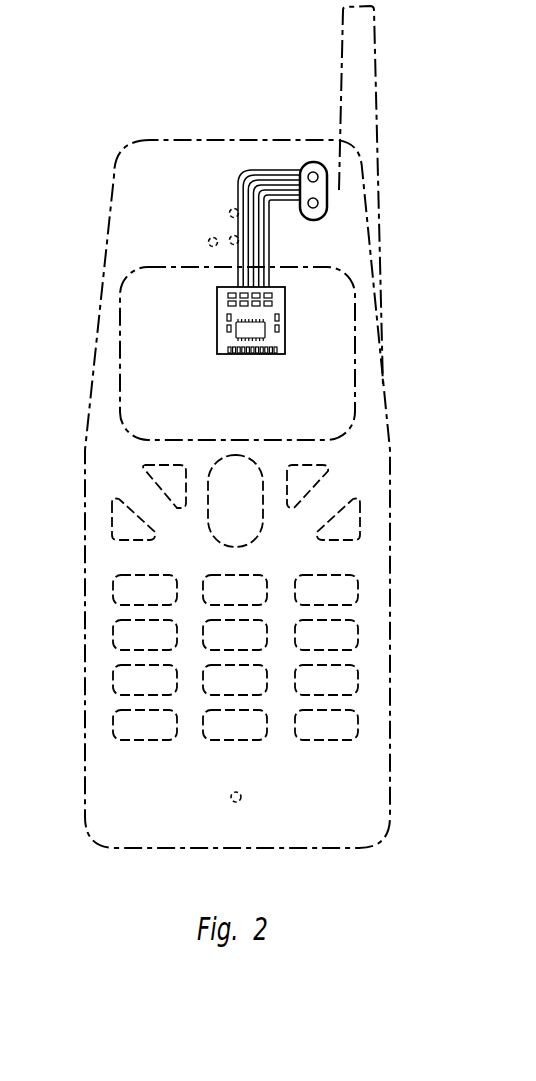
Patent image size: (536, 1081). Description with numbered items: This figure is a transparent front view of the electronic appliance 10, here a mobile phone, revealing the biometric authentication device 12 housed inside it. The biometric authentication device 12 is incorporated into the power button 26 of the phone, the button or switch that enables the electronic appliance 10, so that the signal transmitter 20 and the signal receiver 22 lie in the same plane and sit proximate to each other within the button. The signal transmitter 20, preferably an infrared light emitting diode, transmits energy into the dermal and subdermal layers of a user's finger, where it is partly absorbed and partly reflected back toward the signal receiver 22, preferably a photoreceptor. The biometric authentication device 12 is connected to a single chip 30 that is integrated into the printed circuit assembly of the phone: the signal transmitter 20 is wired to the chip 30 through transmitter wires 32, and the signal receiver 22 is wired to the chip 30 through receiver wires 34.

The electronic appliance 10 is at (118, 118).
The biometric authentication device 12 is at (235, 236).
The signal transmitter 20 is at (358, 163).
The signal receiver 22 is at (318, 203).
The power button 26 is at (241, 192).
The chip 30 is at (217, 332).
The transmitter wires 32 is at (237, 188).
The receiver wires 34 is at (270, 245).